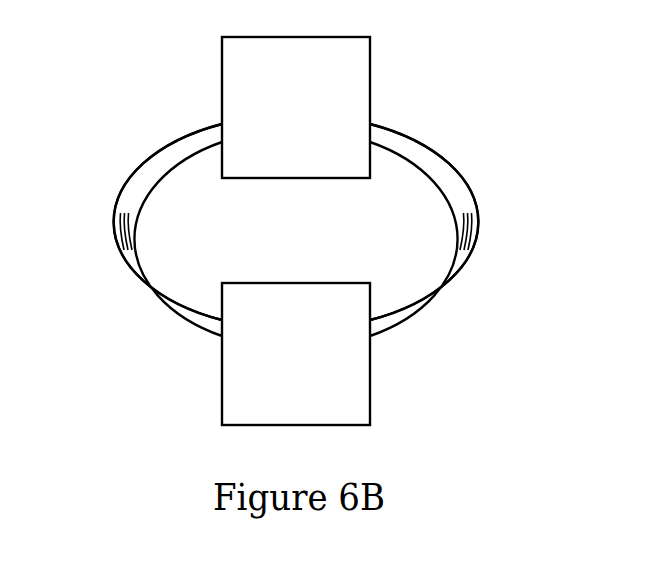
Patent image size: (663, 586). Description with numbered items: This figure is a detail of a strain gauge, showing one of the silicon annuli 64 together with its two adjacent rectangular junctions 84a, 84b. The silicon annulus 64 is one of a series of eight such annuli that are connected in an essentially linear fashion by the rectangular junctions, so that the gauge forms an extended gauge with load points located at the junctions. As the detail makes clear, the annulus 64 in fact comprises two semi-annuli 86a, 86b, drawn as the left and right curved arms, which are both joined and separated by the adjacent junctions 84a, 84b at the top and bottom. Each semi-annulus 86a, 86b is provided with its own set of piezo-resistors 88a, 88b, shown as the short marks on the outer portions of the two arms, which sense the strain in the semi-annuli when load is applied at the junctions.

The silicon annulus 64 is at (88, 176).
The junction 84a is at (370, 75).
The junction 84b is at (370, 378).
The semi-annulus 86a is at (158, 318).
The semi-annulus 86b is at (438, 310).
The set of piezo-resistors 88a is at (117, 238).
The set of piezo-resistors 88b is at (475, 230).